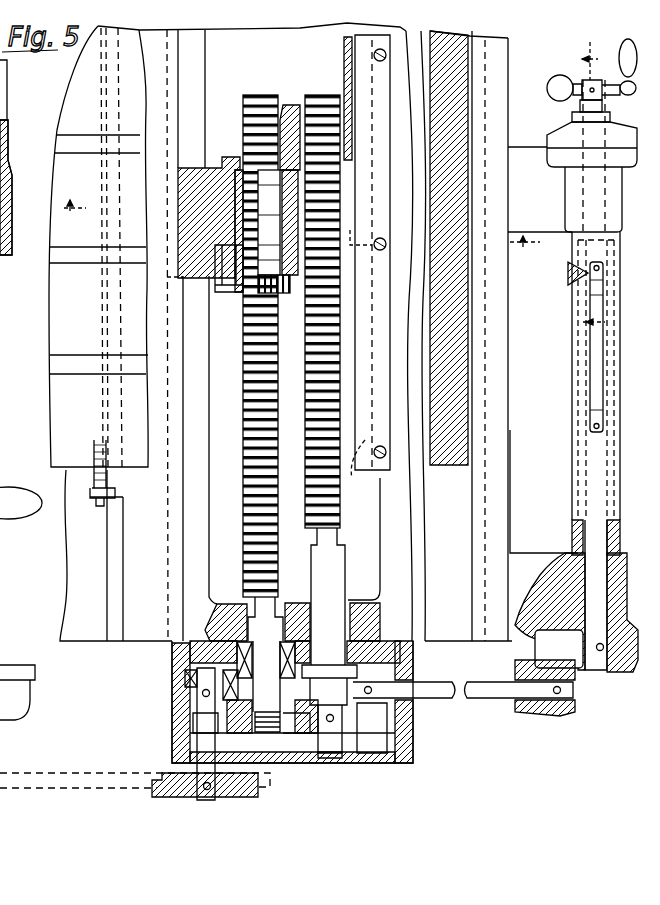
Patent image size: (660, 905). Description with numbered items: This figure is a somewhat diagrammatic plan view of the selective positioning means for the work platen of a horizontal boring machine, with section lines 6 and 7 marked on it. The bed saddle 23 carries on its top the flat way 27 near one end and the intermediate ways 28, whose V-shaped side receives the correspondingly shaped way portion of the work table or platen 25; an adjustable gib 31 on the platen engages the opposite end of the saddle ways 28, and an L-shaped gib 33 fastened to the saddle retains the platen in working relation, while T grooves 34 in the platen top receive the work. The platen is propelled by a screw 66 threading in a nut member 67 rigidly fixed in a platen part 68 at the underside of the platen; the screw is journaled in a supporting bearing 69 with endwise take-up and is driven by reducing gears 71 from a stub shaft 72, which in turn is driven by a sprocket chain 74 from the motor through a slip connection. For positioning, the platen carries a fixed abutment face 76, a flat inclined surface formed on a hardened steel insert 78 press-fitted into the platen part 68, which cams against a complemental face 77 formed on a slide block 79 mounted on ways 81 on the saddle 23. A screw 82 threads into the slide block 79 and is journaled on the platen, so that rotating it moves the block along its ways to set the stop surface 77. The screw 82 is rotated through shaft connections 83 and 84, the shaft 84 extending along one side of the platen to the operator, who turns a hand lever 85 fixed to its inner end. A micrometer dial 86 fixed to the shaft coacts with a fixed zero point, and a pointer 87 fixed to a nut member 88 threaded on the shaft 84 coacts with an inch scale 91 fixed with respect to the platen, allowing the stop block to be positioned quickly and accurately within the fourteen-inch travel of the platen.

The saddle 23 is at (70, 567).
The work table or platen 25 is at (58, 287).
The flat way 27 is at (453, 498).
The intermediate ways 28 is at (195, 507).
The adjustable gib 31 is at (105, 505).
The L-shaped gib 33 is at (12, 155).
The T grooves 34 is at (65, 375).
The screw 66 is at (252, 413).
The nut member 67 is at (242, 292).
The platen part 68 is at (297, 279).
The supporting bearing 69 is at (186, 654).
The reducing gears 71 is at (187, 703).
The stub shaft 72 is at (200, 727).
The sprocket chain 74 is at (13, 790).
The fixed abutment face 76 is at (270, 172).
The complemental face 77 is at (292, 165).
The hardened steel insert 78 is at (222, 157).
The slide block 79 is at (300, 108).
The ways 81 is at (370, 265).
The screw 82 is at (318, 465).
The shaft connection 83 is at (445, 692).
The shaft 84 is at (598, 533).
The hand lever 85 is at (558, 80).
The micrometer dial 86 is at (558, 130).
The pointer 87 is at (568, 272).
The nut member 88 is at (617, 258).
The inch scale 91 is at (598, 418).
The section line 6 is at (301, 231).
The section line 7 is at (593, 193).